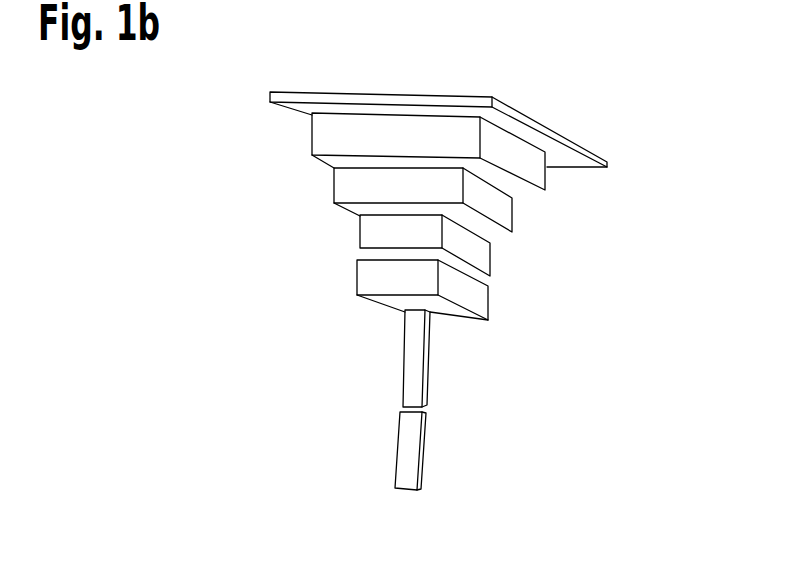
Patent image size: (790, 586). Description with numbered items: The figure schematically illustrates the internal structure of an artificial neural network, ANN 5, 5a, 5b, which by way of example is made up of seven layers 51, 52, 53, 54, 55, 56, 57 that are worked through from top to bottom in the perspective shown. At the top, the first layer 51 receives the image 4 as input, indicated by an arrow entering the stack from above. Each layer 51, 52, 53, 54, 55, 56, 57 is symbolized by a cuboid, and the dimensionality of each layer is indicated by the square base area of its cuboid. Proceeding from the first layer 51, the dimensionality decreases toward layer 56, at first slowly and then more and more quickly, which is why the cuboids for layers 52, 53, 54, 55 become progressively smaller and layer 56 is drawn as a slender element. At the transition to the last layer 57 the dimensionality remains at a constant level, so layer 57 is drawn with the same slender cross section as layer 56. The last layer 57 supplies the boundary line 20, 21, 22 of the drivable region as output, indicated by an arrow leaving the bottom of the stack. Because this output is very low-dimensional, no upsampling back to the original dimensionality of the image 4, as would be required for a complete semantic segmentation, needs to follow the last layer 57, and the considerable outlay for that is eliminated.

The image 4 is at (433, 50).
The ANN 5 is at (398, 291).
The ANN 5a is at (398, 291).
The ANN 5b is at (263, 287).
The first layer 51 is at (607, 167).
The layer 52 is at (545, 190).
The layer 53 is at (512, 231).
The layer 54 is at (490, 274).
The layer 55 is at (488, 319).
The layer 56 is at (429, 385).
The last layer 57 is at (424, 457).
The boundary line 20 is at (481, 519).
The boundary line 21 is at (481, 519).
The boundary line 22 is at (403, 492).